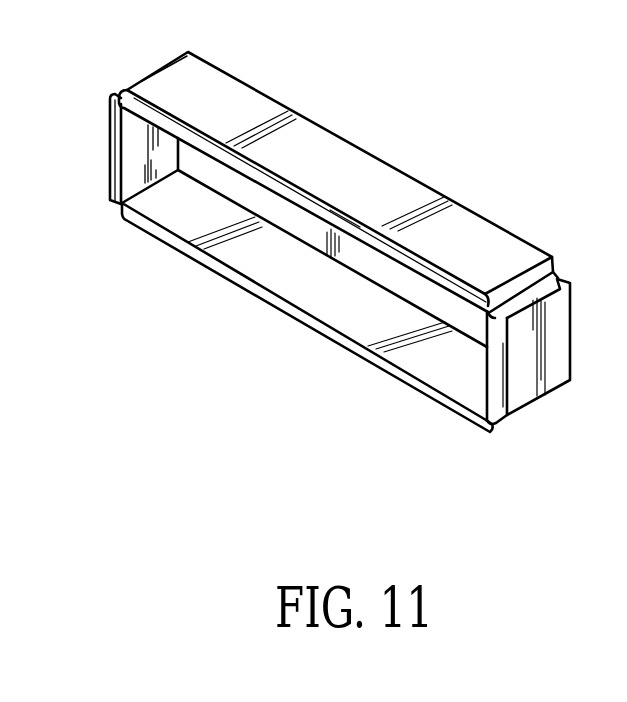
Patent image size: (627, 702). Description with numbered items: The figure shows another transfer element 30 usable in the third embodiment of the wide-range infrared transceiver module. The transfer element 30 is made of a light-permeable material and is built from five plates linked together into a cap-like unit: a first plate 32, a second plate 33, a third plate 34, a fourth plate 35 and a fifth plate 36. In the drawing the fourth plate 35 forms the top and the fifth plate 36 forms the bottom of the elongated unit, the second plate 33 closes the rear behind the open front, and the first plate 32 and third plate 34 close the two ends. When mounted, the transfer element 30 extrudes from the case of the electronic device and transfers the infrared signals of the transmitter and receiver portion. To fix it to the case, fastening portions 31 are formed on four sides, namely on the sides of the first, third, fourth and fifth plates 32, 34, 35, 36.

The transfer element 30 is at (407, 125).
The fastening portion 31 is at (110, 132).
The first plate 32 is at (540, 377).
The second plate 33 is at (300, 225).
The third plate 34 is at (133, 148).
The fourth plate 35 is at (447, 223).
The fifth plate 36 is at (442, 372).